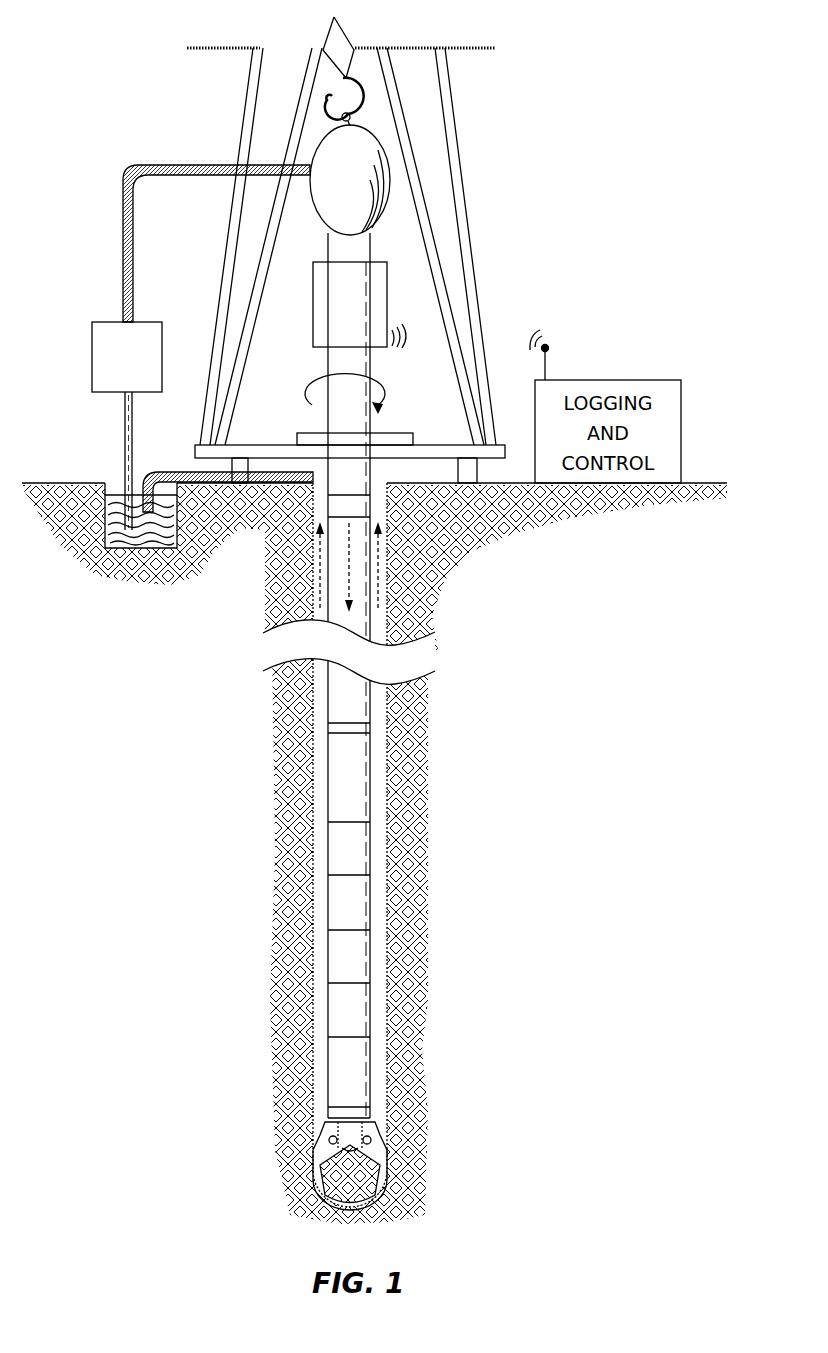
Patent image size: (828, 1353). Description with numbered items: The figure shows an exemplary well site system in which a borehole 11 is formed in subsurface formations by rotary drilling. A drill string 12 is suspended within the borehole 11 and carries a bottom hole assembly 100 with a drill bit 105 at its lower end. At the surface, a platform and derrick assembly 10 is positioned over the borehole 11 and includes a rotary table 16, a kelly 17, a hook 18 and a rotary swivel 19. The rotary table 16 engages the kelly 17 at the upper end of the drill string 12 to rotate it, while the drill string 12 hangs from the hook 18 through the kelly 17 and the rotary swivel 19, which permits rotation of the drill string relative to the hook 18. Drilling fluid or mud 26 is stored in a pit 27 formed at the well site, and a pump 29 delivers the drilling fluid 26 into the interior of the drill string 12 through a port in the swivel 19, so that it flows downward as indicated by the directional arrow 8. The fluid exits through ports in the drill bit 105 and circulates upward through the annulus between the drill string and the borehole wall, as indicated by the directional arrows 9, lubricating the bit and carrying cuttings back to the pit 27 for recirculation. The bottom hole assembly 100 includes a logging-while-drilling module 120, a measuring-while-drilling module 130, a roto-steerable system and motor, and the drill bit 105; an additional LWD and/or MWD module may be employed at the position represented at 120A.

The platform and derrick assembly 10 is at (478, 137).
The hook 18 is at (340, 78).
The rotary swivel 19 is at (322, 211).
The kelly 17 is at (337, 342).
The rotary table 16 is at (396, 440).
The drill string 12 is at (349, 480).
The borehole 11 is at (383, 490).
The directional arrows 9 is at (318, 553).
The directional arrow 8 is at (340, 570).
The pump 29 is at (108, 393).
The pit 27 is at (115, 482).
The drilling fluid 26 is at (140, 548).
The bottom hole assembly 100 is at (362, 966).
The logging-while-drilling module 120 is at (330, 900).
The measuring-while-drilling module 130 is at (335, 957).
The additional LWD and/or MWD module 120A is at (335, 1010).
The drill bit 105 is at (322, 1155).